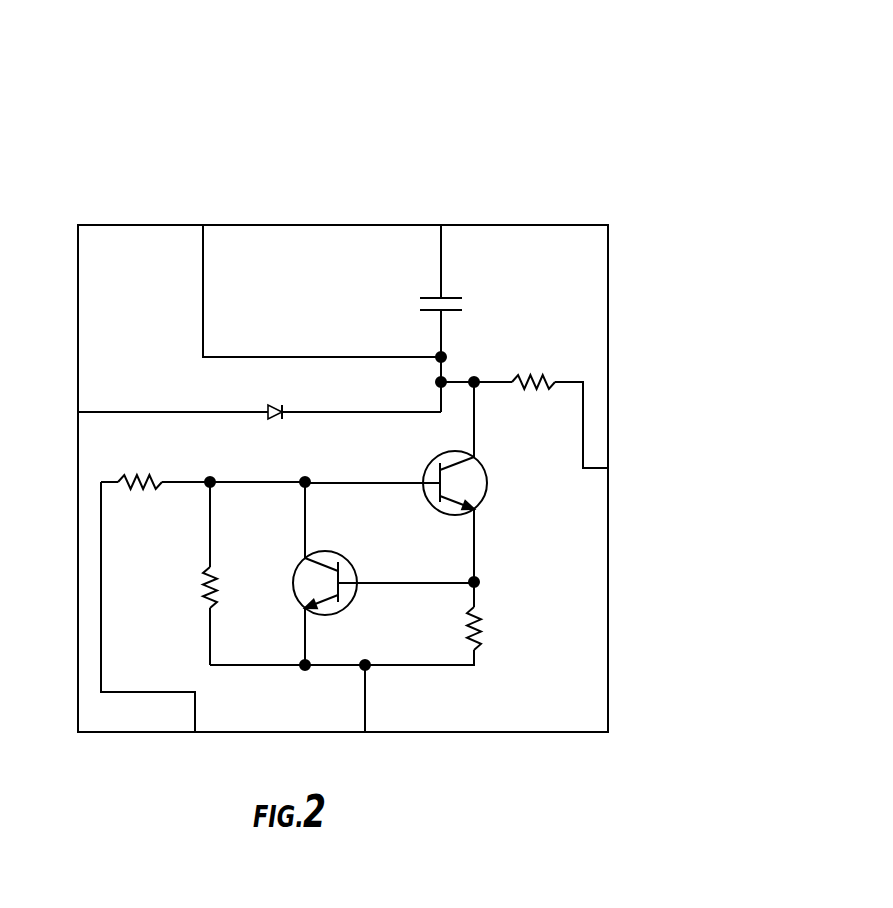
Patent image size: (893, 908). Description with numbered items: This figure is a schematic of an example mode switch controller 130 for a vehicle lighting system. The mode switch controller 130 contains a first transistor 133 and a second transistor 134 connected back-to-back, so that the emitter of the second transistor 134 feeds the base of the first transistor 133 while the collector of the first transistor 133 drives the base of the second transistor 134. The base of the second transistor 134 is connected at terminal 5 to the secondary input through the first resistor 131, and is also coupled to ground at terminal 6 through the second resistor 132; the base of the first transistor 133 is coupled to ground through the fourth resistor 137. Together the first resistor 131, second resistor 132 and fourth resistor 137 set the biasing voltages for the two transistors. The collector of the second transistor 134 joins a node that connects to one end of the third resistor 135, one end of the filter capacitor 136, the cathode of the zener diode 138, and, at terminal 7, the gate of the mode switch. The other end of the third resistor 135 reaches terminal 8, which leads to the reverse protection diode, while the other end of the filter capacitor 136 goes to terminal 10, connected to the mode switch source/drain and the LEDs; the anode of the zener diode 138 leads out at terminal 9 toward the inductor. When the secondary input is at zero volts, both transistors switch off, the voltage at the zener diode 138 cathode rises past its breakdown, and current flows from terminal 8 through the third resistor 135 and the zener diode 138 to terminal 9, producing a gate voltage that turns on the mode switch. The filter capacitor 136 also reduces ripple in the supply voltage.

The mode switch controller 130 is at (657, 163).
The first resistor 131 is at (203, 466).
The second resistor 132 is at (232, 571).
The first transistor 133 is at (383, 573).
The second transistor 134 is at (420, 482).
The third resistor 135 is at (500, 363).
The filter capacitor 136 is at (459, 350).
The fourth resistor 137 is at (373, 621).
The zener diode 138 is at (280, 395).
The terminal 5 is at (149, 632).
The terminal 6 is at (367, 721).
The terminal 7 is at (319, 274).
The terminal 8 is at (592, 434).
The terminal 9 is at (249, 411).
The terminal 10 is at (441, 244).